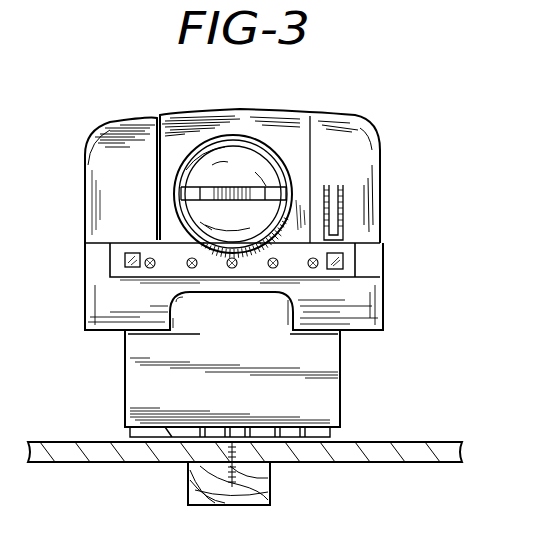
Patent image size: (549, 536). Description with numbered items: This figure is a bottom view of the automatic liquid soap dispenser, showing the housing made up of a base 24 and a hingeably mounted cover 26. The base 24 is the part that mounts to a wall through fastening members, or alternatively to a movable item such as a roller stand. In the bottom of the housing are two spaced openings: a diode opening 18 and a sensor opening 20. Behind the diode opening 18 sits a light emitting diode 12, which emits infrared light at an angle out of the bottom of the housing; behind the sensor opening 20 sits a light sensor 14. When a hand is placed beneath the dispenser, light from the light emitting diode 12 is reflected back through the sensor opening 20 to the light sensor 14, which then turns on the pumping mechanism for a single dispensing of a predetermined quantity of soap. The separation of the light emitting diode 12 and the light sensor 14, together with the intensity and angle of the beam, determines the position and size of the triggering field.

The light emitting diode 12 is at (343, 267).
The light sensor 14 is at (125, 258).
The diode opening 18 is at (341, 262).
The sensor opening 20 is at (120, 270).
The base 24 is at (325, 390).
The cover 26 is at (372, 143).